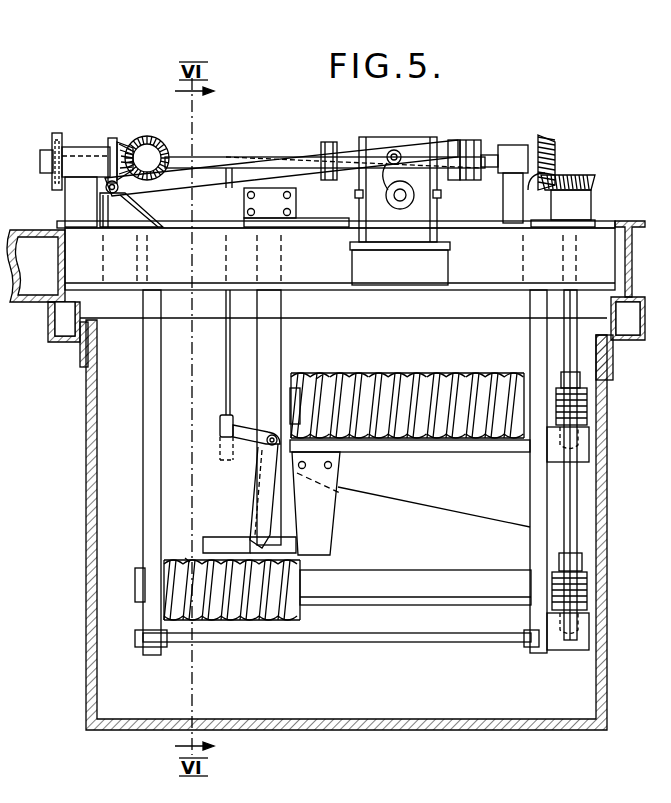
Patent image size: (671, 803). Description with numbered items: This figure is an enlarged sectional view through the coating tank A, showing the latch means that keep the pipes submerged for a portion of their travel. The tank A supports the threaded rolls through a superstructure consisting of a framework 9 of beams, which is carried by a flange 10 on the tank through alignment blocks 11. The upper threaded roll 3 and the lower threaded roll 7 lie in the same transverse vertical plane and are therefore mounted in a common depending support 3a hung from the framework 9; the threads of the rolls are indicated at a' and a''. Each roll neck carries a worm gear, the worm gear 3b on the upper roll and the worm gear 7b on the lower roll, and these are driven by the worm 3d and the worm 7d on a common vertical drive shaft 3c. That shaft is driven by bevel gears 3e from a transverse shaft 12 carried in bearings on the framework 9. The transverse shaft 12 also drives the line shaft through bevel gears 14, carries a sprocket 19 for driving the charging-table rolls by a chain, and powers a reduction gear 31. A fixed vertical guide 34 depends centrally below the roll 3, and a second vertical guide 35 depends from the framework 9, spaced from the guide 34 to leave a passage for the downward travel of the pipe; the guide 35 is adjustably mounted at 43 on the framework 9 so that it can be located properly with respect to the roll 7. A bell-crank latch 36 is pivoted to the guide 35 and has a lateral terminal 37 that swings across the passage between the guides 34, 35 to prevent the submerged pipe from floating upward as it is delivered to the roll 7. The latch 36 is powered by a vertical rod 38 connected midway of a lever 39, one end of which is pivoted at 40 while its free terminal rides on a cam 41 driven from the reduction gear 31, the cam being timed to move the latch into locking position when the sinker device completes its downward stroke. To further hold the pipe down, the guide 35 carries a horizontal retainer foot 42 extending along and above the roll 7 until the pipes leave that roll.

The coating tank A is at (86, 668).
The framework 9 is at (60, 268).
The flange 10 is at (74, 345).
The alignment blocks 11 is at (70, 318).
The transverse shaft 12 is at (236, 152).
The bevel gears 14 is at (130, 138).
The sprocket 19 is at (57, 133).
The pivot 40 is at (104, 190).
The lever 39 is at (292, 163).
The adjustable mounting 43 is at (268, 206).
The reduction gear 31 is at (384, 137).
The cam 41 is at (405, 178).
The bevel gears 3e is at (566, 172).
The second vertical guide 35 is at (283, 346).
The common depending support 3a is at (536, 488).
The threaded roll 3 is at (398, 374).
The worm thread a' is at (330, 363).
The fixed vertical guide 34 is at (322, 506).
The vertical rod 38 is at (222, 405).
The latch 36 is at (262, 492).
The lateral terminal 37 is at (266, 524).
The horizontal retainer foot 42 is at (205, 540).
The threaded roll 7 is at (270, 610).
The worm thread a'' is at (95, 557).
The vertical drive shaft 3c is at (642, 486).
The worm gear 3b is at (592, 388).
The worm 3d is at (588, 410).
The worm gear 7b is at (560, 562).
The worm 7d is at (556, 592).